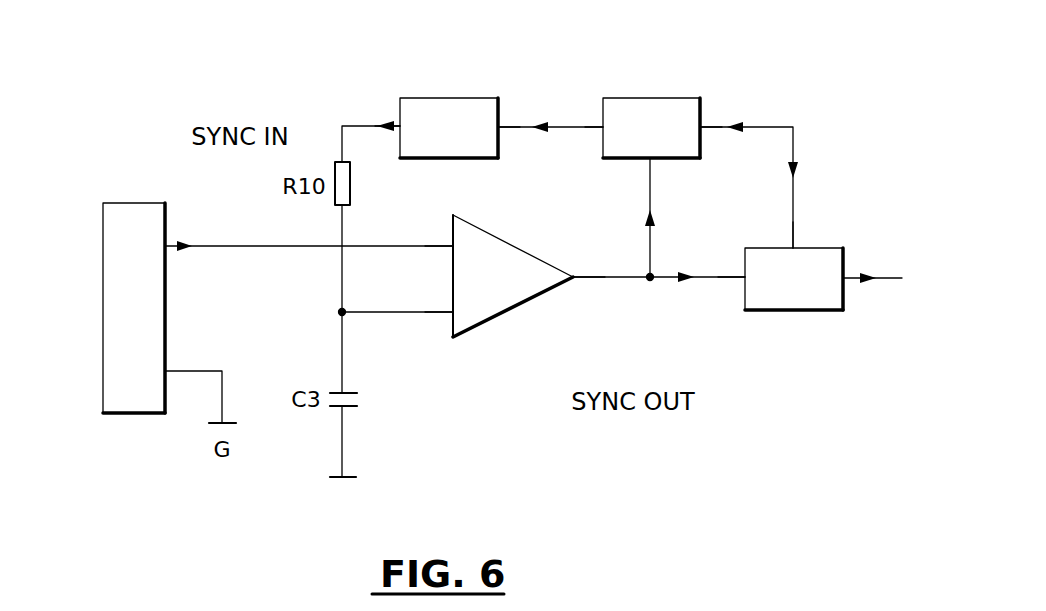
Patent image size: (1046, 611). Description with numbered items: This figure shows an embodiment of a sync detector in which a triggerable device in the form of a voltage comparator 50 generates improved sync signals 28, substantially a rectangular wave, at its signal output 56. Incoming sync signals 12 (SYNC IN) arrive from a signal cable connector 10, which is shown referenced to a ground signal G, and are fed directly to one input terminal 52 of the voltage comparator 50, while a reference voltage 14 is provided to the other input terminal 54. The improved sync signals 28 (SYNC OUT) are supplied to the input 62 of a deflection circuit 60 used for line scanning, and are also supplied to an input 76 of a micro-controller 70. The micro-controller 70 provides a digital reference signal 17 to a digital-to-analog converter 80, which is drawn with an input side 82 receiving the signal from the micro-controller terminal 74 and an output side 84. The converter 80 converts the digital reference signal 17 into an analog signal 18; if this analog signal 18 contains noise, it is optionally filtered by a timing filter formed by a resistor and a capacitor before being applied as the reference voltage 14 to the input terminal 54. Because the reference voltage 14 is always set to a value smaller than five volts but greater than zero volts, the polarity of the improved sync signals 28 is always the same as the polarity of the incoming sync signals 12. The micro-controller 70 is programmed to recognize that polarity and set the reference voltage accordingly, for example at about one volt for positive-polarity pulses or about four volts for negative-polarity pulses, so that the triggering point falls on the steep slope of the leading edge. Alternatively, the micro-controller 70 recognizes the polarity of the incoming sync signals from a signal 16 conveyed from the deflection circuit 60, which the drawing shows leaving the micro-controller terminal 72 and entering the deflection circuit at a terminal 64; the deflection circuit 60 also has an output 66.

The signal cable connector 10 is at (113, 262).
The incoming sync signals 12 is at (218, 245).
The reference voltage 14 is at (342, 338).
The signal from deflection circuit 16 is at (796, 152).
The digital reference signal 17 is at (550, 128).
The analog signal 18 is at (346, 126).
The improved sync signals 28 is at (612, 282).
The voltage comparator 50 is at (517, 258).
The input terminal 52 is at (450, 235).
The input terminal 54 is at (445, 323).
The signal output 56 is at (575, 280).
The deflection circuit 60 is at (798, 312).
The input of deflection circuit 62 is at (742, 283).
The deflection circuit control input 64 is at (803, 248).
The deflection circuit output 66 is at (850, 290).
The micro-controller 70 is at (630, 102).
The microcontroller output 72 is at (704, 122).
The microcontroller D/A output 74 is at (599, 124).
The input of micro-controller 76 is at (660, 165).
The digital-to-analog converter 80 is at (433, 101).
The D/A converter input 82 is at (503, 124).
The D/A converter output 84 is at (395, 126).